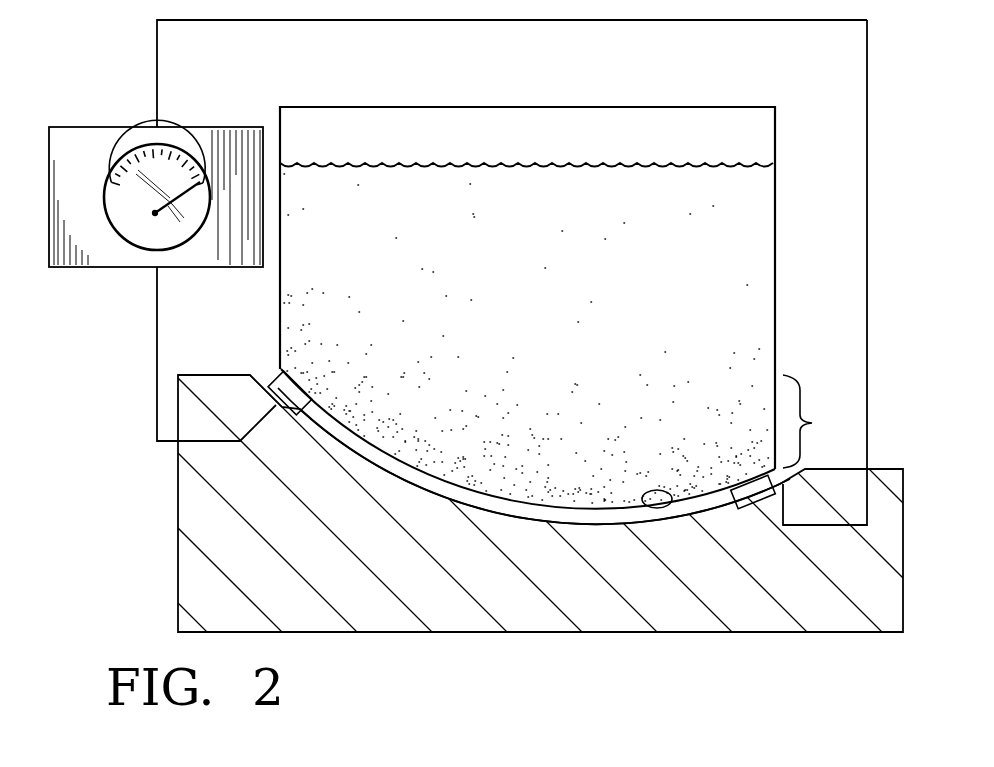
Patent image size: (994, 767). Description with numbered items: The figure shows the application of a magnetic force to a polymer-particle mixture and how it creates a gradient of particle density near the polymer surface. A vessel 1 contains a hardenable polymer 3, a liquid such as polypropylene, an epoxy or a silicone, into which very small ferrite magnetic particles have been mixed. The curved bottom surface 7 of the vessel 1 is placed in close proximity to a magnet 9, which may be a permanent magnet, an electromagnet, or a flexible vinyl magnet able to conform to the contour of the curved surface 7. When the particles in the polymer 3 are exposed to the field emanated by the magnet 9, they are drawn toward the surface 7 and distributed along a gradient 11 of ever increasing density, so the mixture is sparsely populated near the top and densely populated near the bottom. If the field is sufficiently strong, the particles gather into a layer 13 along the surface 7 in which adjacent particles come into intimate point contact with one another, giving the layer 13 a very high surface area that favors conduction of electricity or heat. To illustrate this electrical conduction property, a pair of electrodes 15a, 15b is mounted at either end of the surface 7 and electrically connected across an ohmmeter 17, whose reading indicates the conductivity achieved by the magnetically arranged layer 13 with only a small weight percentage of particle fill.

The vessel 1 is at (283, 323).
The hardenable polymer 3 is at (522, 160).
The surface 7 is at (482, 502).
The magnet 9 is at (572, 588).
The gradient 11 is at (815, 421).
The layer 13 is at (672, 506).
The electrode 15a is at (280, 412).
The electrode 15b is at (738, 503).
The ohmmeter 17 is at (88, 143).